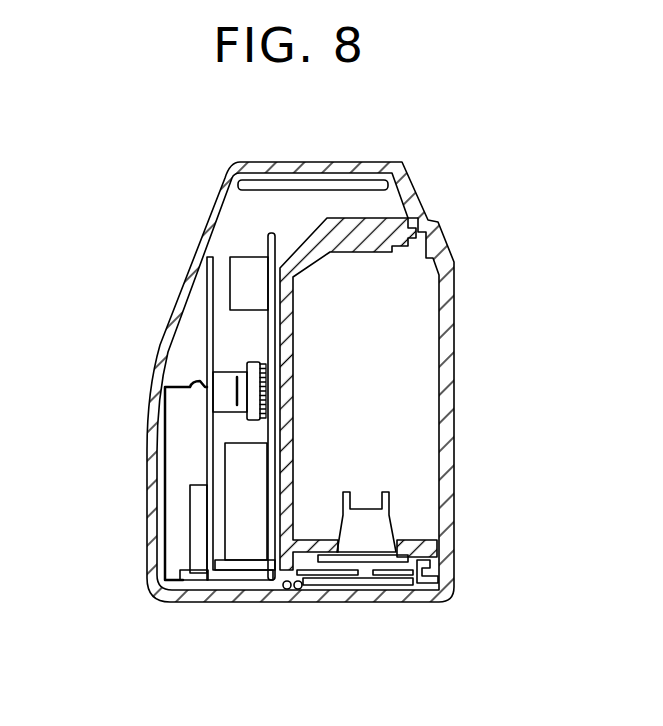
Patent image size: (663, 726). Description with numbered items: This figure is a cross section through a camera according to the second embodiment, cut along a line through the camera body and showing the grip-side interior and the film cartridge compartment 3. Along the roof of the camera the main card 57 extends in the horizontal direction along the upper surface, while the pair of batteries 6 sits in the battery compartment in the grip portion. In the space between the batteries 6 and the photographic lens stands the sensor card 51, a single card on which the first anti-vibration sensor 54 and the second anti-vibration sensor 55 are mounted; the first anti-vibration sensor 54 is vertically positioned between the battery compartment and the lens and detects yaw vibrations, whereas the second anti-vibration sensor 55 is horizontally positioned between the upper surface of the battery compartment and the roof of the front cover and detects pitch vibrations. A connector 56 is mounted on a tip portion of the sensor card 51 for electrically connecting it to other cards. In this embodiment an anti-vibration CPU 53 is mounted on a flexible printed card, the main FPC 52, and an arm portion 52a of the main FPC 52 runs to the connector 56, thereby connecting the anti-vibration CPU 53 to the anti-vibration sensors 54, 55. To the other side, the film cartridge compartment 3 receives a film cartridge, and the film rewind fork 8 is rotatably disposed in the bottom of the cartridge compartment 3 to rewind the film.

The film cartridge compartment 3 is at (420, 298).
The batteries 6 is at (170, 403).
The film rewind fork 8 is at (382, 530).
The sensor card 51 is at (265, 240).
The main FPC 52 is at (208, 286).
The arm portion 52a is at (218, 404).
The anti-vibration CPU 53 is at (195, 513).
The first anti-vibration sensor 54 is at (251, 556).
The second anti-vibration sensor 55 is at (233, 263).
The connector 56 is at (247, 366).
The main card 57 is at (410, 187).